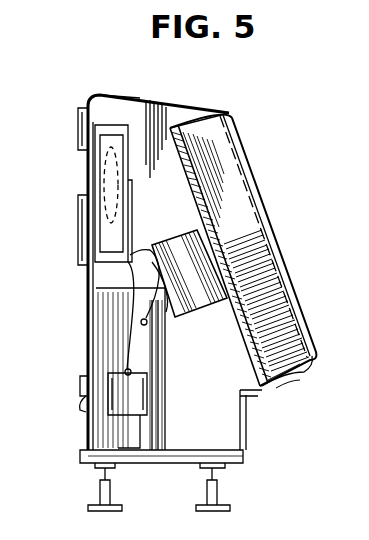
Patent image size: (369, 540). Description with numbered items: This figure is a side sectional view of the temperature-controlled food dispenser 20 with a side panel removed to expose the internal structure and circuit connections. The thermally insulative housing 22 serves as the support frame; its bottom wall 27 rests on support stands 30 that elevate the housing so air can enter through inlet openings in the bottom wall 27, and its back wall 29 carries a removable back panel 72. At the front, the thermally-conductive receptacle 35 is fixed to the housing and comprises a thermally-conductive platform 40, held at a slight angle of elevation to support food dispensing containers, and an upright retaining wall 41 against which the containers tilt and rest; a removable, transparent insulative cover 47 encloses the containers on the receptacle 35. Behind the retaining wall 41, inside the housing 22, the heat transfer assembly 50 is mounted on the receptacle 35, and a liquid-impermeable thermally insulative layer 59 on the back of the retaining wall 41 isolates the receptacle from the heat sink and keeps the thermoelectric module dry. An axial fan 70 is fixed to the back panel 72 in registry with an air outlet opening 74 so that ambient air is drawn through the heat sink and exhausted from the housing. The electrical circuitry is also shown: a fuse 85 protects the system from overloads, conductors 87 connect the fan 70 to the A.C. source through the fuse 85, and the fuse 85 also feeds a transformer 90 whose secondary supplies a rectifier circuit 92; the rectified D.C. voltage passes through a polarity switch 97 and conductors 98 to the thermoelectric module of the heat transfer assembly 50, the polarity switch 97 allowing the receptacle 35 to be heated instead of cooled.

The food dispenser 20 is at (98, 86).
The housing 22 is at (86, 317).
The bottom wall 27 is at (138, 452).
The back wall 29 is at (83, 110).
The support stands 30 is at (100, 494).
The thermally-conductive receptacle 35 is at (226, 254).
The thermally-conductive platform 40 is at (300, 370).
The retaining wall 41 is at (174, 126).
The insulative cover 47 is at (268, 226).
The heat transfer assembly 50 is at (172, 236).
The thermally insulative layer 59 is at (240, 352).
The axial fan 70 is at (110, 132).
The back panel 72 is at (84, 378).
The air outlet opening 74 is at (79, 214).
The fuse 85 is at (124, 364).
The conductors 87 is at (138, 278).
The transformer 90 is at (144, 402).
The rectifier circuit 92 is at (150, 345).
The polarity switch 97 is at (78, 406).
The conductors 98 is at (163, 308).